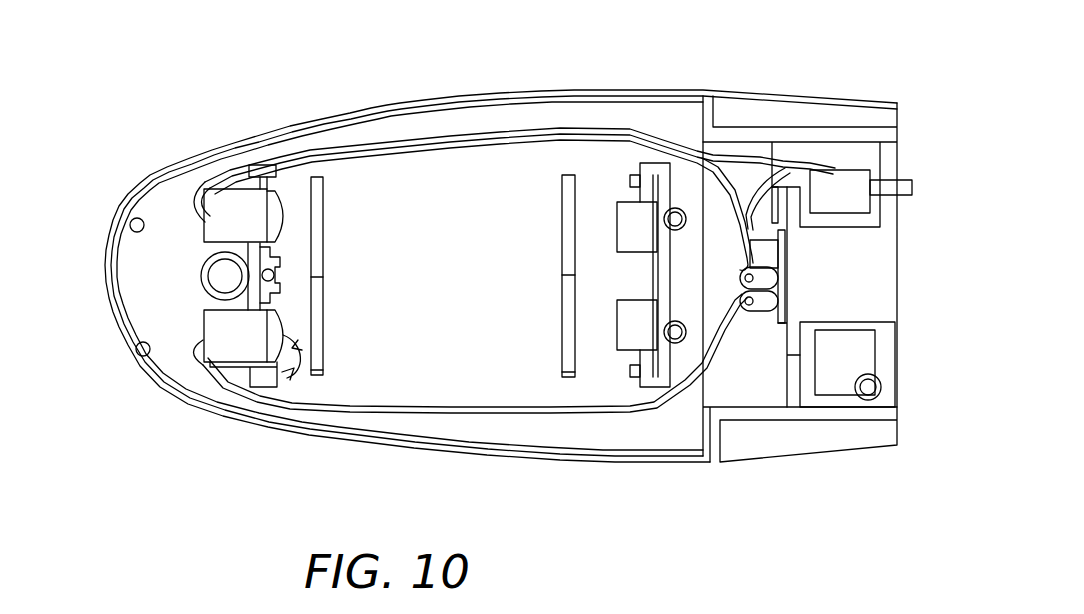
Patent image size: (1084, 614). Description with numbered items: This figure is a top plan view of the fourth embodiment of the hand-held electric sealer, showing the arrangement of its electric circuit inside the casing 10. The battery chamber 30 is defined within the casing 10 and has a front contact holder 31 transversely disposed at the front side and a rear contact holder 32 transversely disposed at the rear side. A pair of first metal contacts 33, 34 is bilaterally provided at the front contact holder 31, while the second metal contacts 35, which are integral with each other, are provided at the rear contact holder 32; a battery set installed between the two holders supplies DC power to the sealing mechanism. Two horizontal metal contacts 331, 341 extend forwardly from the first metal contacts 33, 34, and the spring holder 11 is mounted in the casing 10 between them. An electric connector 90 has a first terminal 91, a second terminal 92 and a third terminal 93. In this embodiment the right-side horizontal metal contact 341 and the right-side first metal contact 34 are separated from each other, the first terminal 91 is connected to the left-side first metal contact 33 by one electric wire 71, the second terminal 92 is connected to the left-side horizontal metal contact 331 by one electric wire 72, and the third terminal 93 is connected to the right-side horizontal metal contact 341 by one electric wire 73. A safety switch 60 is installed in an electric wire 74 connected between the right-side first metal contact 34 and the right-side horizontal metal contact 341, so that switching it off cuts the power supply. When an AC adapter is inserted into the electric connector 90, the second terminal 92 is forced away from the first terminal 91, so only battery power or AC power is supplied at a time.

The casing 10 is at (662, 110).
The spring holder 11 is at (200, 273).
The battery chamber 30 is at (423, 160).
The front contact holder 31 is at (260, 167).
The rear contact holder 32 is at (653, 387).
The first metal contact 33 is at (272, 203).
The first metal contact 34 is at (282, 330).
The second metal contacts 35 is at (628, 210).
The safety switch 60 is at (855, 180).
The electric wire 71 is at (362, 155).
The electric wire 72 is at (335, 146).
The electric wire 73 is at (190, 363).
The electric wire 74 is at (287, 376).
The electric connector 90 is at (880, 247).
The first terminal 91 is at (767, 280).
The second terminal 92 is at (763, 240).
The third terminal 93 is at (758, 312).
The horizontal metal contact 331 is at (222, 203).
The horizontal metal contact 341 is at (230, 357).